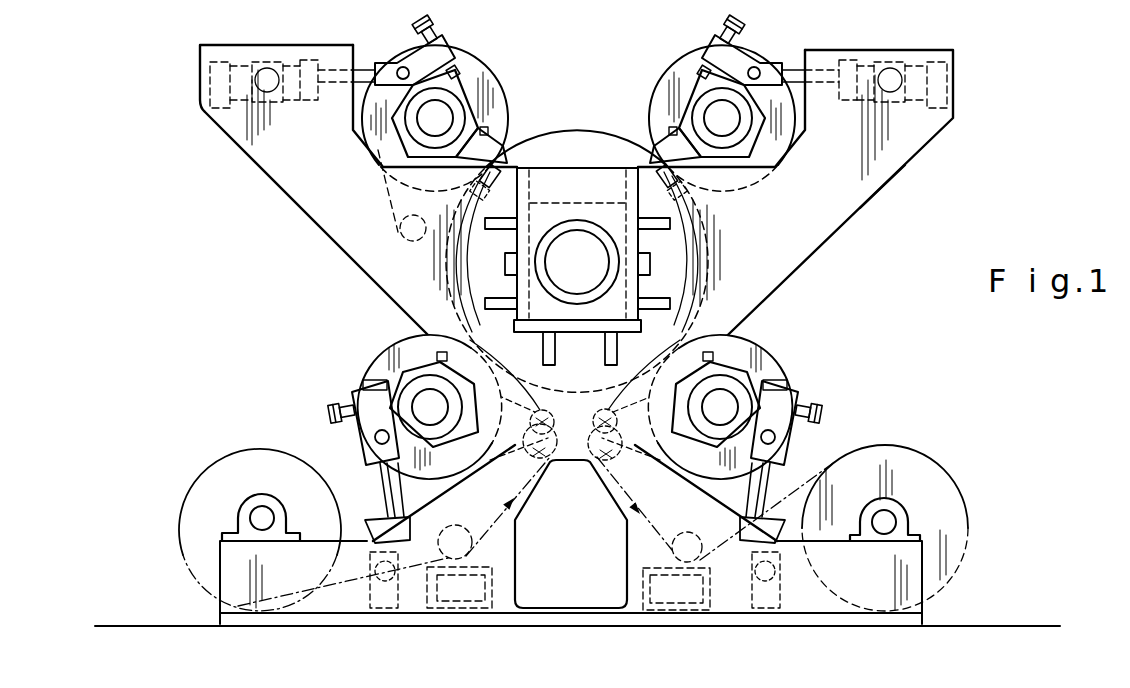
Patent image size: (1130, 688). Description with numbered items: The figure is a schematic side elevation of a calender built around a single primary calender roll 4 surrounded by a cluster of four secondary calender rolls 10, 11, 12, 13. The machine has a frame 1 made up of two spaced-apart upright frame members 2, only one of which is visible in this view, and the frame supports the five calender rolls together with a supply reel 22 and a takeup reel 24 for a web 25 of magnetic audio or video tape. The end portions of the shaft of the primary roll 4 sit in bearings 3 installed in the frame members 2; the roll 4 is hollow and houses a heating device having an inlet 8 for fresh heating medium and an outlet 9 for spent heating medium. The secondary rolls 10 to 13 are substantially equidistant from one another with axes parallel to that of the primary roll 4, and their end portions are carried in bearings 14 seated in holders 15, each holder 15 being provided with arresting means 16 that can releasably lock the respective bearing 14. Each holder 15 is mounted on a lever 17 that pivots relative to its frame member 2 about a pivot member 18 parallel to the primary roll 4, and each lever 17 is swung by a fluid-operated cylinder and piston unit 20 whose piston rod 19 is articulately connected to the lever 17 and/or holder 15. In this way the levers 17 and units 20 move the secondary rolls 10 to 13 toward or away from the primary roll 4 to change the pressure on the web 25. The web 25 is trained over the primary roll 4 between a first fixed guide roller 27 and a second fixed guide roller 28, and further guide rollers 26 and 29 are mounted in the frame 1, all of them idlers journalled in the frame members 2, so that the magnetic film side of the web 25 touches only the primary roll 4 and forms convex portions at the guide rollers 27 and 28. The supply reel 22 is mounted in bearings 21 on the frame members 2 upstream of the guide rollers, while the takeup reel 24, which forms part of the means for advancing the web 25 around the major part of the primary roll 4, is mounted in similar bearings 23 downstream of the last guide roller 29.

The frame 1 is at (880, 190).
The upright frame member 2 is at (824, 232).
The bearing 3 is at (547, 212).
The primary calender roll 4 is at (602, 131).
The inlet 8 is at (505, 263).
The outlet 9 is at (650, 265).
The secondary calender roll 10 is at (467, 63).
The secondary calender roll 11 is at (685, 77).
The secondary calender roll 12 is at (770, 363).
The secondary calender roll 13 is at (385, 358).
The bearing 14 is at (405, 148).
The holder 15 is at (377, 117).
The arresting means 16 is at (437, 29).
The lever 17 is at (392, 203).
The pivot member 18 is at (403, 232).
The piston rod 19 is at (376, 61).
The cylinder and piston unit 20 is at (262, 60).
The bearing 21 is at (246, 513).
The supply reel 22 is at (246, 448).
The bearing 23 is at (906, 517).
The takeup reel 24 is at (905, 466).
The web 25 is at (342, 592).
The guide roller 26 is at (457, 553).
The first fixed guide roller 27 is at (530, 452).
The second fixed guide roller 28 is at (607, 455).
The guide roller 29 is at (686, 554).